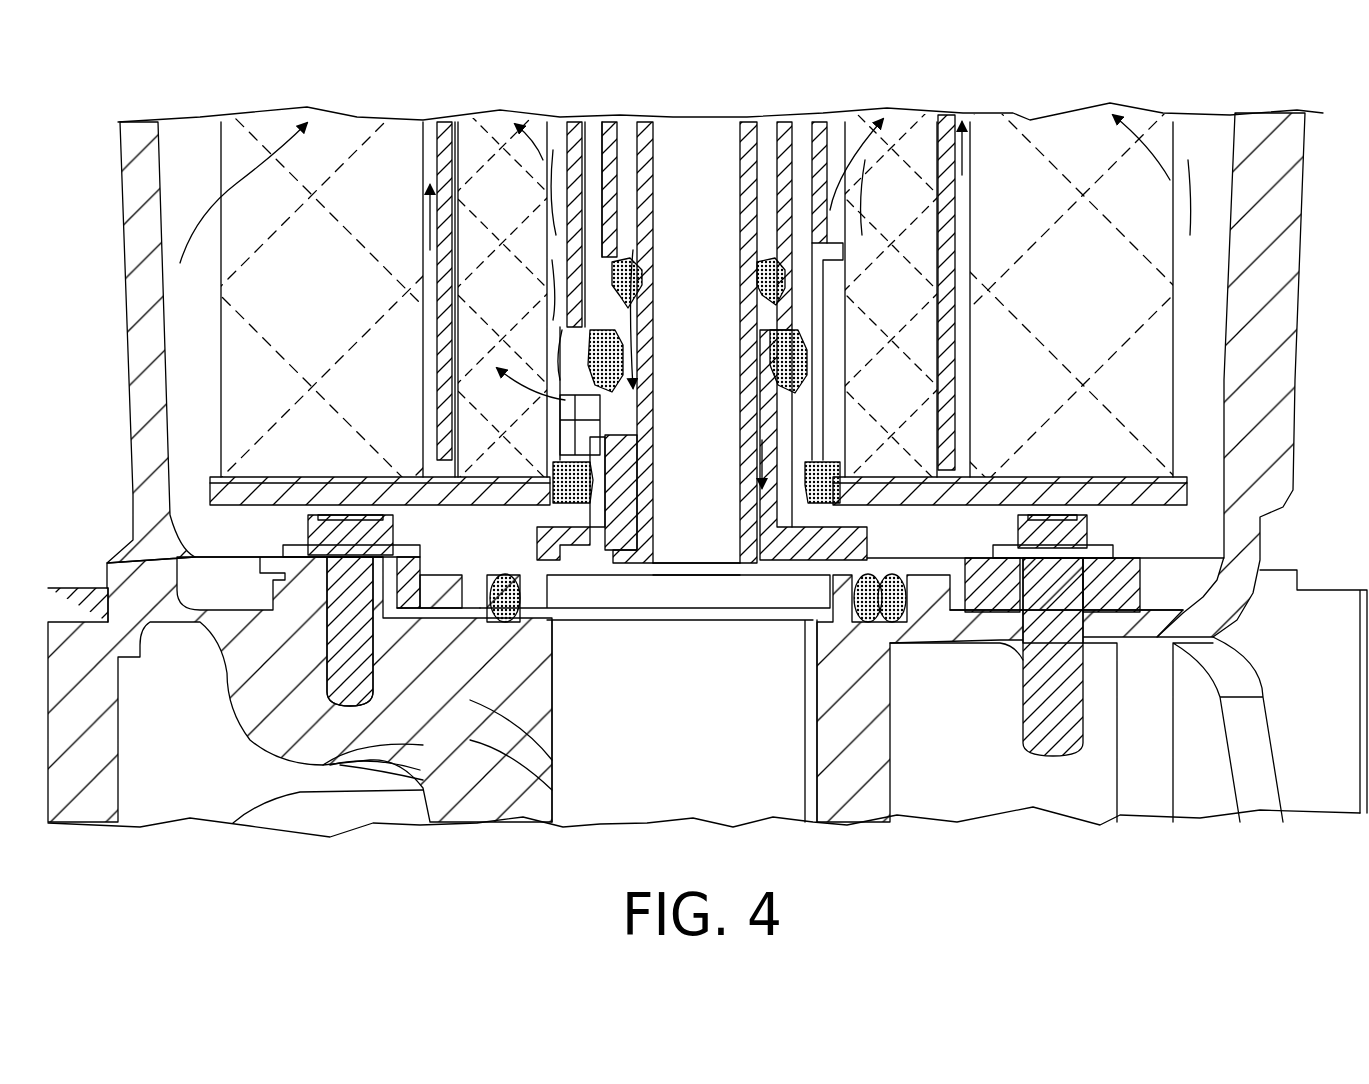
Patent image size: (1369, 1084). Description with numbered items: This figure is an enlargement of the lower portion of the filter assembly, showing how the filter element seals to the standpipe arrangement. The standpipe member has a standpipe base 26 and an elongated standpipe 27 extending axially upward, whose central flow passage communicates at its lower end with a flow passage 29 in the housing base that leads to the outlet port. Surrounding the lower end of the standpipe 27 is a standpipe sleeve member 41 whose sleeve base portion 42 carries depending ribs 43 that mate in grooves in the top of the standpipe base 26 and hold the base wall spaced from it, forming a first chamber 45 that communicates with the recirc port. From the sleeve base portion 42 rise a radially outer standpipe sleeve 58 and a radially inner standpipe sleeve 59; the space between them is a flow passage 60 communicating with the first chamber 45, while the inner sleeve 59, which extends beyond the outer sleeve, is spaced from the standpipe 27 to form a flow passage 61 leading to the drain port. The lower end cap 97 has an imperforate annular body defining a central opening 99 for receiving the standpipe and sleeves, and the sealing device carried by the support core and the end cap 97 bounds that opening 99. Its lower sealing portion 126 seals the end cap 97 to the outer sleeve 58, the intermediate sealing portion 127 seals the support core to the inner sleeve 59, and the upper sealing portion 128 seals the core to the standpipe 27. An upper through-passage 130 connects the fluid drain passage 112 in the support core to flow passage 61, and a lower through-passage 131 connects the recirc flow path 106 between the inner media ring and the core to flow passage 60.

The fluid drain passage 112 is at (590, 143).
The standpipe 27 is at (770, 140).
The upper sealing portion 128 is at (640, 277).
The recirc flow path 106 is at (833, 282).
The upper through-passage 130 is at (747, 313).
The intermediate sealing portion 127 is at (590, 358).
The radially inner standpipe sleeve 59 is at (800, 386).
The lower through-passage 131 is at (605, 410).
The radially outer standpipe sleeve 58 is at (798, 458).
The lower sealing portion 126 is at (555, 468).
The flow passage 61 is at (757, 415).
The lower end cap 97 is at (210, 497).
The flow passage 60 is at (610, 496).
The standpipe base 26 is at (175, 527).
The sleeve base portion 42 is at (523, 538).
The standpipe sleeve member 41 is at (872, 530).
The first chamber 45 is at (588, 543).
The central opening 99 is at (698, 535).
The depending ribs 43 is at (830, 580).
The flow passage 29 is at (687, 760).